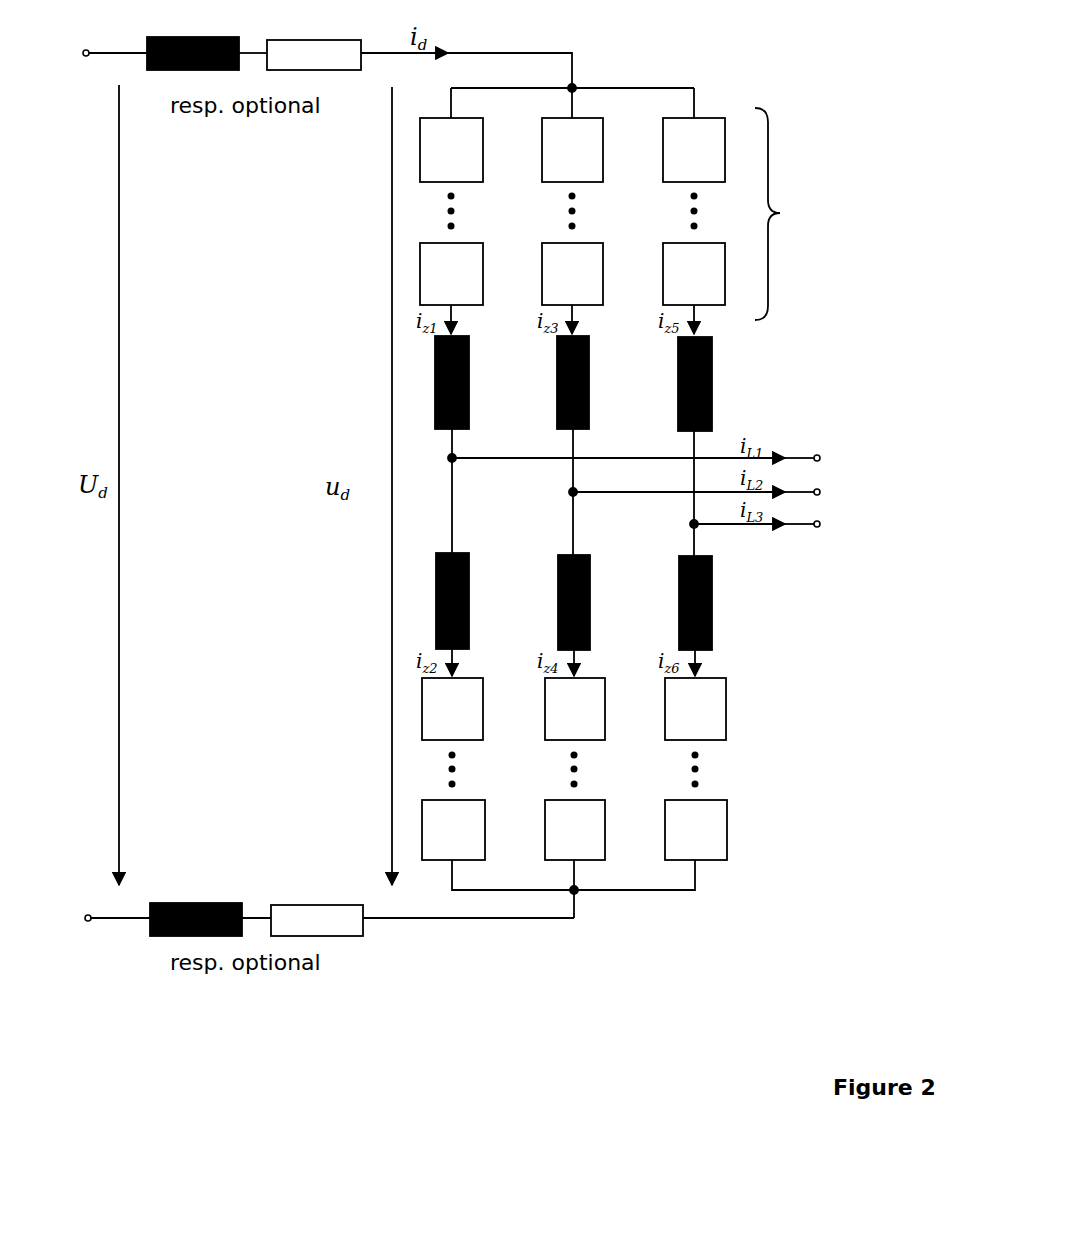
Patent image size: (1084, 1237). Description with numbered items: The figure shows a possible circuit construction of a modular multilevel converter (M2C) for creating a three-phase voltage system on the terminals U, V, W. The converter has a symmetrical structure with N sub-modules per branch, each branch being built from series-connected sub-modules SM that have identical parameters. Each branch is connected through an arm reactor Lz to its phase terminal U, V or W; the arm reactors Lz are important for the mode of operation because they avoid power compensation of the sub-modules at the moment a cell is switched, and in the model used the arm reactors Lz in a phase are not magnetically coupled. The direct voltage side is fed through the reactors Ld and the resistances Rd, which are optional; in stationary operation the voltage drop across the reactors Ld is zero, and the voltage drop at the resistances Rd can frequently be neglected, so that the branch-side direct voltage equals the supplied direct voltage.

The reactor Ld is at (194, 470).
The resistance Rd is at (315, 470).
The sub-module SM is at (451, 150).
The number of sub-modules per branch N is at (783, 214).
The arm reactor Lz is at (555, 493).
The terminal U is at (622, 458).
The terminal V is at (682, 492).
The terminal W is at (739, 525).